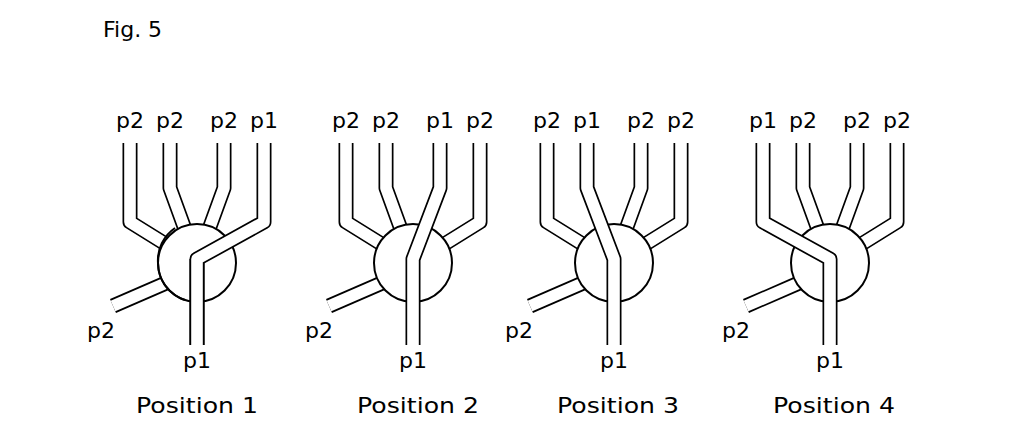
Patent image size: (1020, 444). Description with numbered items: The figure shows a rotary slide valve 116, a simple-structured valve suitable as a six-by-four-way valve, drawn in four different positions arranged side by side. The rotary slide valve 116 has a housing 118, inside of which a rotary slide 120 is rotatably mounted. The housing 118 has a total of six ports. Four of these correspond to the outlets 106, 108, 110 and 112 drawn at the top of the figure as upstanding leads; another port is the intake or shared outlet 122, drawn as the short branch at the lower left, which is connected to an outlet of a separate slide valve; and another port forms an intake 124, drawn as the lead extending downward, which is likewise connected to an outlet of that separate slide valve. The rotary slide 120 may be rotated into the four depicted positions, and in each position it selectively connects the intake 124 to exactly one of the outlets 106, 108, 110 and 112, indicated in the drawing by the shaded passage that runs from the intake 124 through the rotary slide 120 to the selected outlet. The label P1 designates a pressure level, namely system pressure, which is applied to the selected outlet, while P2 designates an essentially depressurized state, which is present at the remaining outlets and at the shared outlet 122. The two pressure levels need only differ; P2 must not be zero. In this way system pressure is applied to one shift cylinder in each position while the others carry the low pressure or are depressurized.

The outlet 106 is at (127, 183).
The outlet 108 is at (174, 162).
The outlet 110 is at (228, 162).
The outlet 112 is at (264, 160).
The rotary slide valve 116 is at (246, 281).
The housing 118 is at (175, 297).
The rotary slide 120 is at (155, 262).
The shared outlet 122 is at (138, 295).
The intake 124 is at (205, 320).